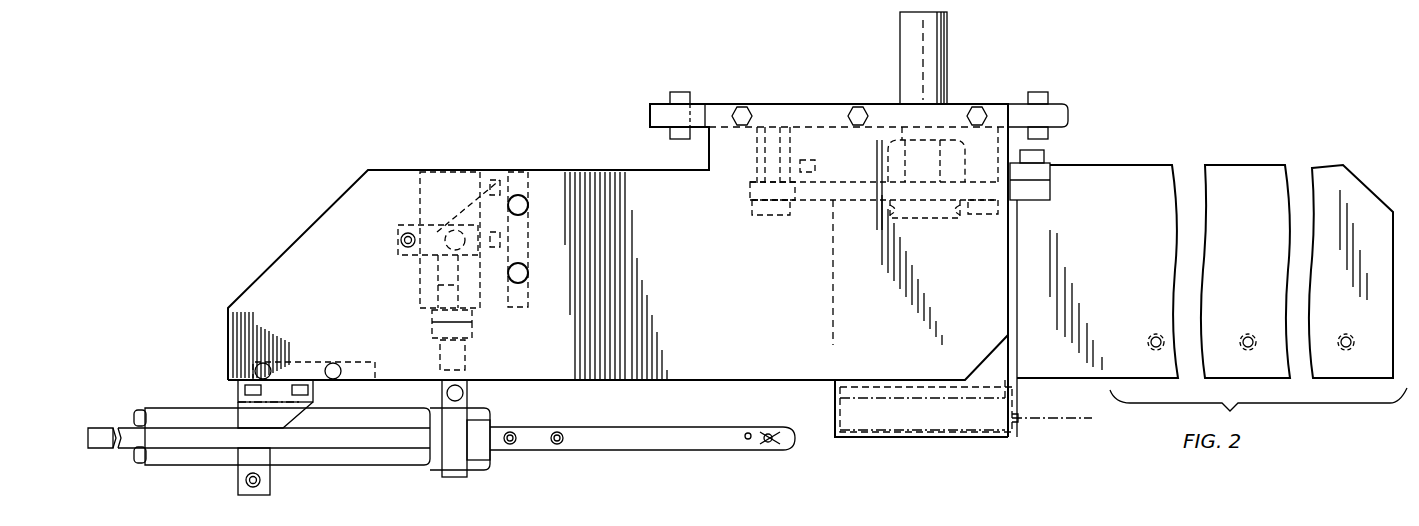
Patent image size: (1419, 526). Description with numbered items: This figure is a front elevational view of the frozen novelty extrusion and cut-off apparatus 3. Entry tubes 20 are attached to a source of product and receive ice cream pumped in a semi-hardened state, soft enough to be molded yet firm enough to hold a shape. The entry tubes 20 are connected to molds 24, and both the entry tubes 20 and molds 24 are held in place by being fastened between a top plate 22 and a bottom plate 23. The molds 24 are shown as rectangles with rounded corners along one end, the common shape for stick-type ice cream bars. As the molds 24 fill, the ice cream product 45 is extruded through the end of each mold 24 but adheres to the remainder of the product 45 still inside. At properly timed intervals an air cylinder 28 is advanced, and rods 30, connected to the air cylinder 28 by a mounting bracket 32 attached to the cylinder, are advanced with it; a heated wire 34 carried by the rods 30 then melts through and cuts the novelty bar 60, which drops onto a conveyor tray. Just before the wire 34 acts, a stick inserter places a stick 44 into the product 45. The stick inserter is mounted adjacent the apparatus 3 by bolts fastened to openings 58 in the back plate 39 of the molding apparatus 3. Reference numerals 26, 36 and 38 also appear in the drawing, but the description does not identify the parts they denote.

The frozen novelty extrusion and cut-off apparatus 3 is at (647, 94).
The entry tubes 20 is at (948, 45).
The top plate 22 is at (1030, 108).
The bottom plate 23 is at (822, 193).
The molds 24 is at (832, 290).
The pin 26 is at (884, 192).
The air cylinder 28 is at (400, 408).
The rods 30 is at (640, 440).
The mounting bracket 32 is at (450, 445).
The heated wire 34 is at (790, 445).
The guide 36 is at (318, 362).
The adjusting screw 38 is at (405, 240).
The back plate 39 is at (1115, 256).
The stick 44 is at (1074, 425).
The ice cream product 45 is at (867, 390).
The openings 58 is at (1152, 335).
The novelty bar 60 is at (964, 450).